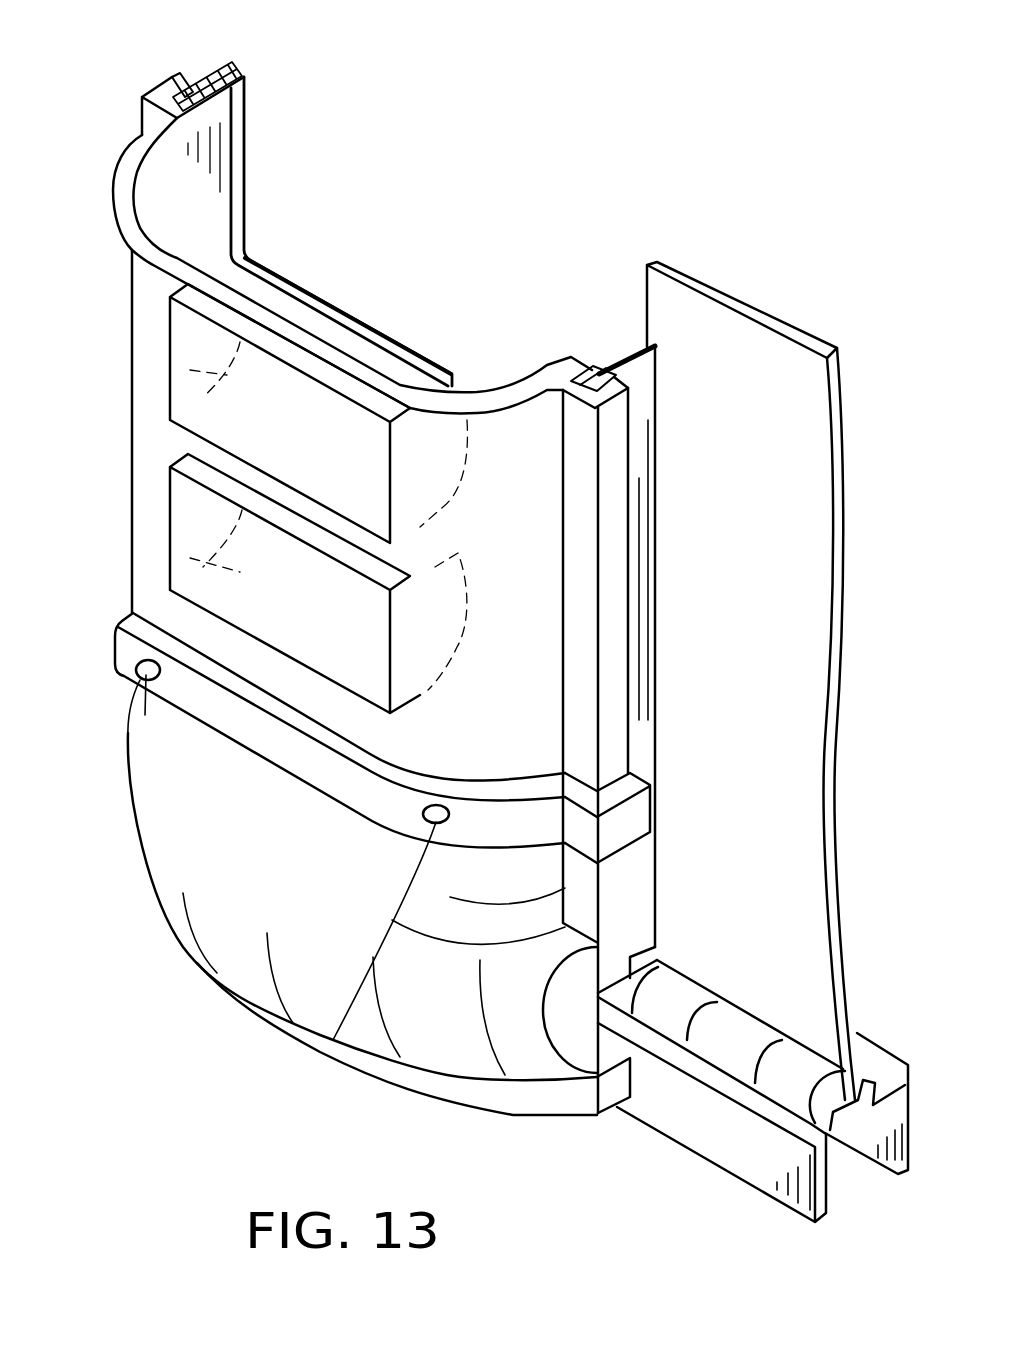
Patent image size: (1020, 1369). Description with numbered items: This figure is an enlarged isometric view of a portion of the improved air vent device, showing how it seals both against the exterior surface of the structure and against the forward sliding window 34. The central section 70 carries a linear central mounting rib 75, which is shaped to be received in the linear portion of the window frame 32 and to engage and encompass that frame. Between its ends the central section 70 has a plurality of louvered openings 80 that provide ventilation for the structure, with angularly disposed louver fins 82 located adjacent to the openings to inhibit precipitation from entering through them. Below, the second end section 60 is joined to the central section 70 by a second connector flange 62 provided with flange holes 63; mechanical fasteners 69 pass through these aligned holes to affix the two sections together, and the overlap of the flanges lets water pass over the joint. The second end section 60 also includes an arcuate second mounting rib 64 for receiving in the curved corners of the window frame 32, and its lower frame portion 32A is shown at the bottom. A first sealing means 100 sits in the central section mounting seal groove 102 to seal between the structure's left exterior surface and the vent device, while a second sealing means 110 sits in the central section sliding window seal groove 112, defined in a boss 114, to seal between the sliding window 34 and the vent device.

The window frame 32 is at (748, 1147).
The lower frame portion 32A is at (663, 1102).
The forward sliding window 34 is at (822, 550).
The second end section 60 is at (233, 950).
The second connector flange 62 is at (297, 760).
The flange holes 63 is at (133, 750).
The second mounting rib 64 is at (440, 1106).
The mechanical fasteners 69 is at (135, 695).
The central section 70 is at (150, 457).
The central mounting rib 75 is at (143, 115).
The louvered openings 80 is at (215, 385).
The louver fins 82 is at (235, 568).
The first sealing means 100 is at (242, 72).
The central section mounting seal groove 102 is at (173, 78).
The second sealing means 110 is at (645, 362).
The central section sliding window seal groove 112 is at (590, 367).
The boss 114 is at (598, 406).